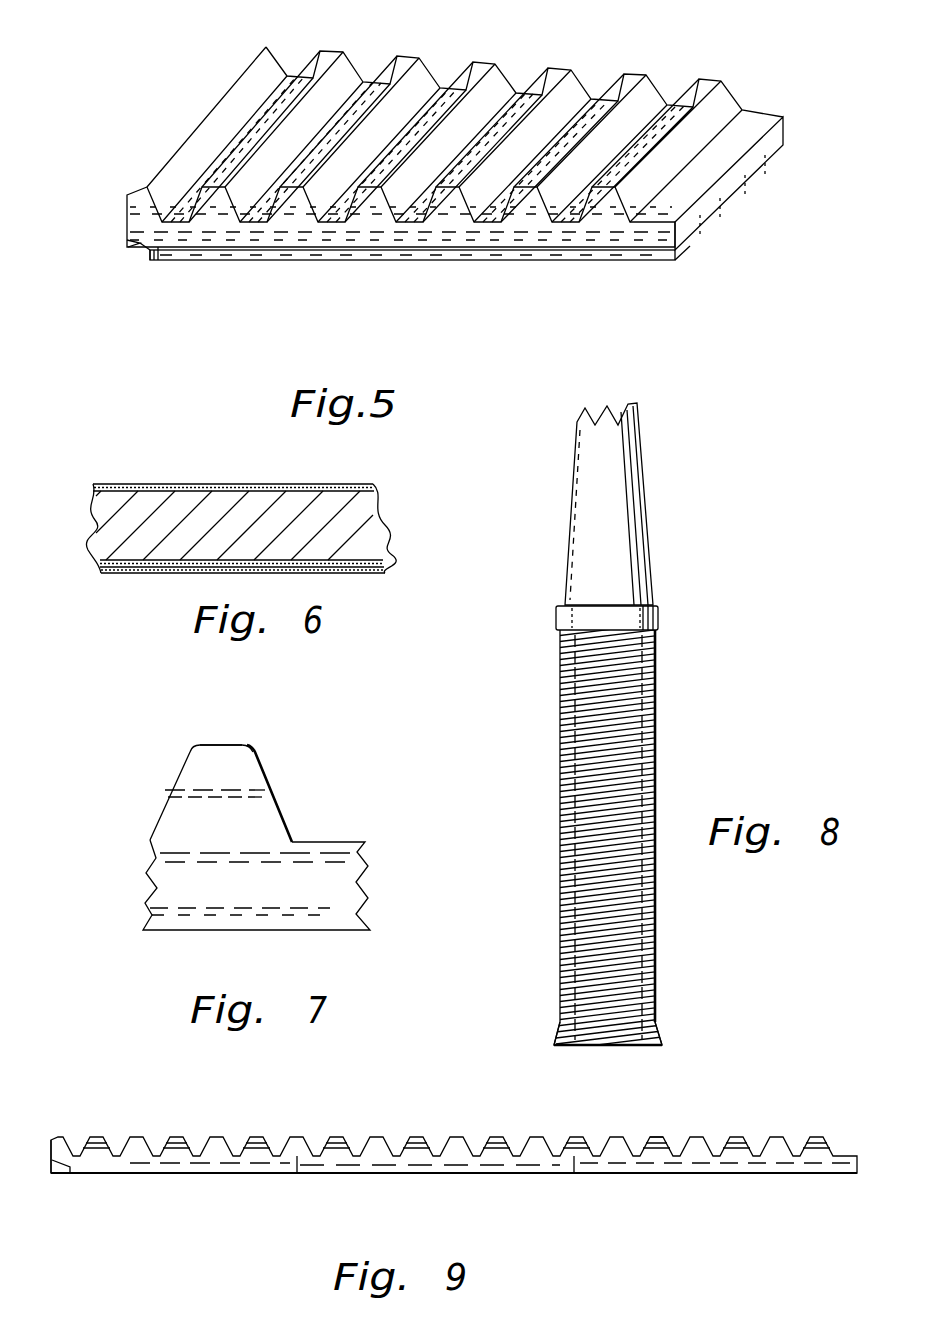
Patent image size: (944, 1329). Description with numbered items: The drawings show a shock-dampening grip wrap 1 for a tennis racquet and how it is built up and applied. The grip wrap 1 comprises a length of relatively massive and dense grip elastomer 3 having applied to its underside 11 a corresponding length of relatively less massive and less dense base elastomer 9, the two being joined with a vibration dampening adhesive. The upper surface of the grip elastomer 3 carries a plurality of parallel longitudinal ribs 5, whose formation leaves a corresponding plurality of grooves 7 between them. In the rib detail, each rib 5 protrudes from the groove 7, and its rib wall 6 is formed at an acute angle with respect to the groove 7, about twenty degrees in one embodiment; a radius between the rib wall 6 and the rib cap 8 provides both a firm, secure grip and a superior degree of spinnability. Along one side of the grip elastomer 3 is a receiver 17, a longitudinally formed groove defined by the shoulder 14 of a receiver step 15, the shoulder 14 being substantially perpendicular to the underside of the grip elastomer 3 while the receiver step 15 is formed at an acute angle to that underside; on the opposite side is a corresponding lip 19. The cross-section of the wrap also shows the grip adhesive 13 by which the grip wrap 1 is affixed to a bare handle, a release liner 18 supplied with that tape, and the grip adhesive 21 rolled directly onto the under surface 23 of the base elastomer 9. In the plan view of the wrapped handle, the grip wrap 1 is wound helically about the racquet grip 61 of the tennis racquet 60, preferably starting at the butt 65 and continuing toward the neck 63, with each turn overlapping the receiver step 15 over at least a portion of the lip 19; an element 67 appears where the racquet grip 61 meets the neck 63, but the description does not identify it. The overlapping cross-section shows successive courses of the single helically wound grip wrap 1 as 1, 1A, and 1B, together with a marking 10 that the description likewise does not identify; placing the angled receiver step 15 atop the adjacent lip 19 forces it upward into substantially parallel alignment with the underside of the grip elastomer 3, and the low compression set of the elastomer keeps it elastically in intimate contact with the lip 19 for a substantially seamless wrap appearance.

In FIG. 5, the grip wrap 1 is at (130, 86).
In FIG. 6, the grip wrap 1 is at (112, 462).
In FIG. 8, the grip wrap 1 is at (655, 700).
In FIG. 9, the grip wrap 1 is at (177, 1137).
In FIG. 9, the course of grip wrap 1A is at (418, 1137).
In FIG. 9, the course of grip wrap 1B is at (737, 1137).
In FIG. 5, the grip elastomer 3 is at (262, 237).
In FIG. 7, the grip elastomer 3 is at (217, 915).
In FIG. 5, the rib 5 is at (602, 202).
In FIG. 7, the rib 5 is at (160, 835).
In FIG. 7, the rib wall 6 is at (172, 778).
In FIG. 5, the groove 7 is at (563, 207).
In FIG. 7, the groove 7 is at (330, 842).
In FIG. 7, the rib cap 8 is at (215, 745).
In FIG. 5, the base elastomer 9 is at (667, 254).
In FIG. 9, the joint between segments 10 is at (655, 1137).
In FIG. 5, the underside 11 is at (155, 258).
In FIG. 5, the grip adhesive 13 is at (158, 260).
In FIG. 5, the shoulder 14 is at (148, 256).
In FIG. 5, the receiver step 15 is at (143, 246).
In FIG. 6, the receiver step 15 is at (385, 573).
In FIG. 9, the receiver step 15 is at (283, 1140).
In FIG. 5, the receiver 17 is at (145, 251).
In FIG. 9, the receiver 17 is at (62, 1165).
In FIG. 6, the release liner 18 is at (375, 505).
In FIG. 5, the lip 19 is at (660, 238).
In FIG. 6, the lip 19 is at (325, 487).
In FIG. 9, the lip 19 is at (838, 1164).
In FIG. 5, the grip adhesive 21 is at (392, 255).
In FIG. 5, the under surface 23 is at (462, 263).
In FIG. 8, the tennis racquet 60 is at (537, 686).
In FIG. 8, the racquet grip 61 is at (572, 790).
In FIG. 8, the neck 63 is at (632, 487).
In FIG. 8, the butt 65 is at (660, 1032).
In FIG. 8, the collar 67 is at (660, 612).